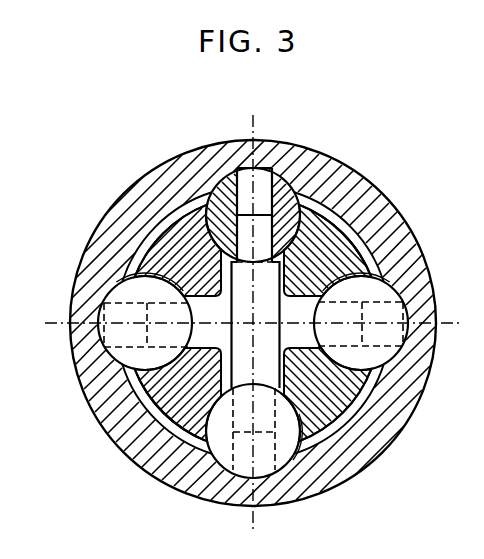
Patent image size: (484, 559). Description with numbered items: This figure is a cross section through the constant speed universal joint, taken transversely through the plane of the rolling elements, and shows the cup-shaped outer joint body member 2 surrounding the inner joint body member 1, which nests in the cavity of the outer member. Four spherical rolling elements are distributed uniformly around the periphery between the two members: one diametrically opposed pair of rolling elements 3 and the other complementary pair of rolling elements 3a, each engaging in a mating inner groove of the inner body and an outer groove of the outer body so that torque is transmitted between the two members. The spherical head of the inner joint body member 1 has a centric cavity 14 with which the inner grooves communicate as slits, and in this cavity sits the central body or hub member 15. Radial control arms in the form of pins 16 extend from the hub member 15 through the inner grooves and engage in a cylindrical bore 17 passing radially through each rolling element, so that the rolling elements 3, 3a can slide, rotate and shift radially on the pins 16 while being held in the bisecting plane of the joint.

The inner joint body member 1 is at (198, 423).
The outer joint body member 2 is at (103, 252).
The rolling elements 3 is at (147, 358).
The complementary rolling elements 3a is at (180, 228).
The centric cavity 14 is at (192, 302).
The central body or hub member 15 is at (150, 376).
The pins 16 is at (240, 222).
The cylindrical bore 17 is at (262, 178).